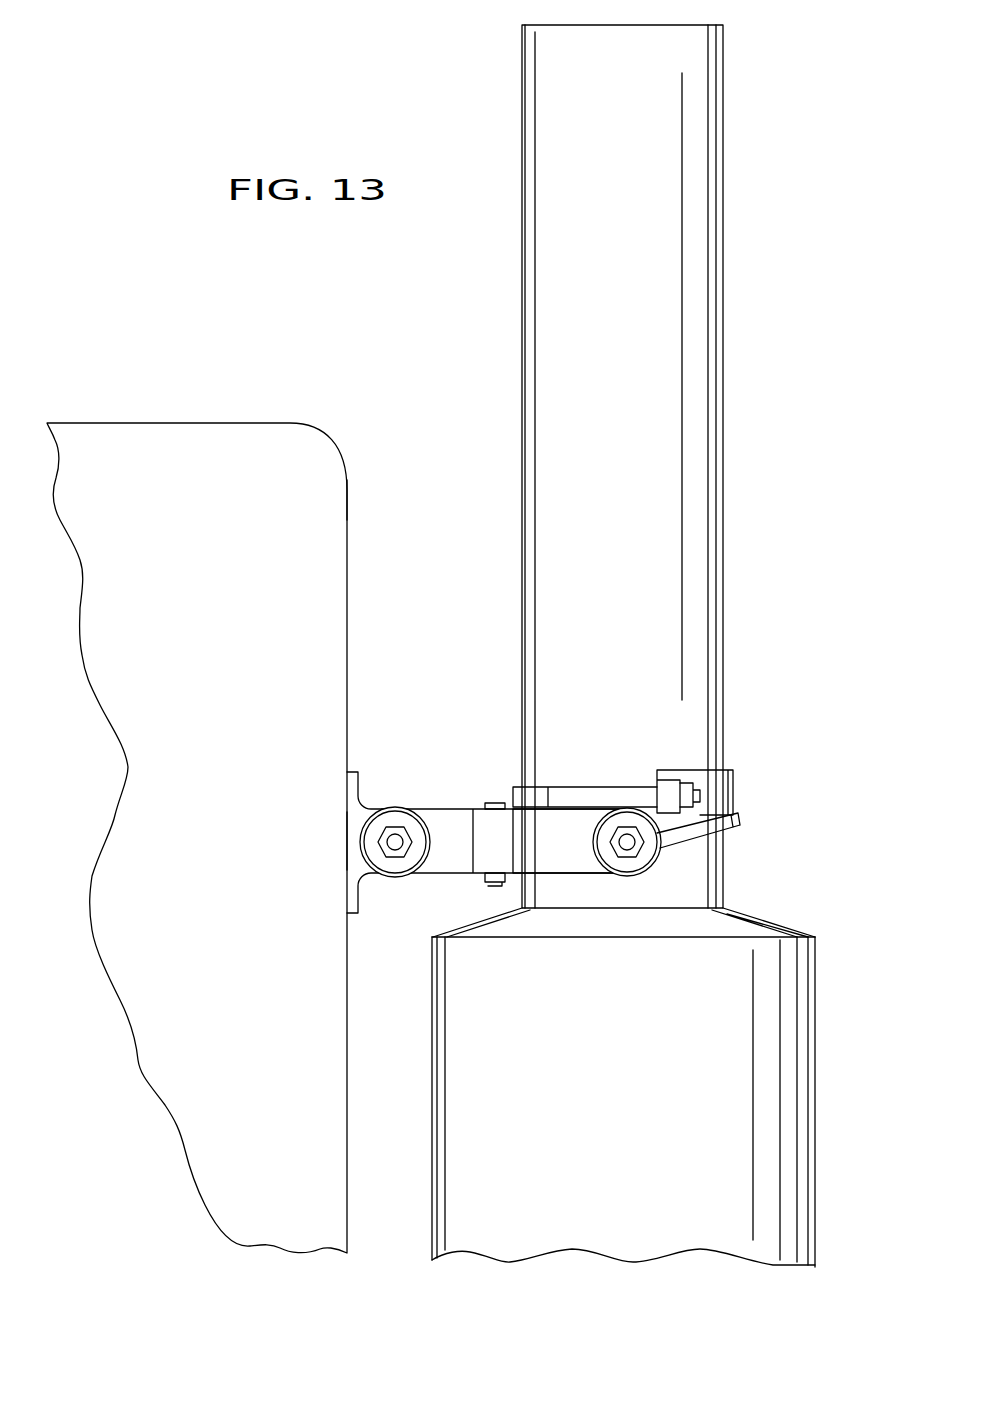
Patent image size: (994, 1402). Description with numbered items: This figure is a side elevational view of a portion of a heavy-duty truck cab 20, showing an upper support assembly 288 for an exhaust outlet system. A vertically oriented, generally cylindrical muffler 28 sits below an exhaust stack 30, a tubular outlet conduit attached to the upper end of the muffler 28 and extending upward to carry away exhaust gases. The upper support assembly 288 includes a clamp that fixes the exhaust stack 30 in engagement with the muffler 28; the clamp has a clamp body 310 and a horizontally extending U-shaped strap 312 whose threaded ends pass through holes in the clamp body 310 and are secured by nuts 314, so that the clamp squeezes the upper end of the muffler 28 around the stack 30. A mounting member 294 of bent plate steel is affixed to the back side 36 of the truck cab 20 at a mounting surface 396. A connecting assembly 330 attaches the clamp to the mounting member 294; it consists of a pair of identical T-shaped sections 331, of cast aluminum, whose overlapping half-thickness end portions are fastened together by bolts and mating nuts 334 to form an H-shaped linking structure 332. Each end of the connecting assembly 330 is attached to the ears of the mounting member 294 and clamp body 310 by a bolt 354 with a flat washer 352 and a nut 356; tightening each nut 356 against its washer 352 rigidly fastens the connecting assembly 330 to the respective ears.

The cab 20 is at (168, 402).
The back side 36 is at (347, 500).
The mounting surface 396 is at (346, 841).
The exhaust stack 30 is at (725, 583).
The muffler 28 is at (815, 1032).
The mounting member 294 is at (358, 792).
The upper support assembly 288 is at (766, 767).
The clamp body 310 is at (733, 787).
The nuts 314 is at (687, 783).
The U-shaped strap 312 is at (540, 787).
The connecting assembly 330 is at (550, 814).
The H-shaped linking structure 332 is at (437, 875).
The T-shaped sections 331 is at (540, 862).
The bolts and mating nuts 334 is at (483, 807).
The flat washer 352 is at (647, 850).
The bolt 354 is at (627, 838).
The nut 356 is at (607, 830).